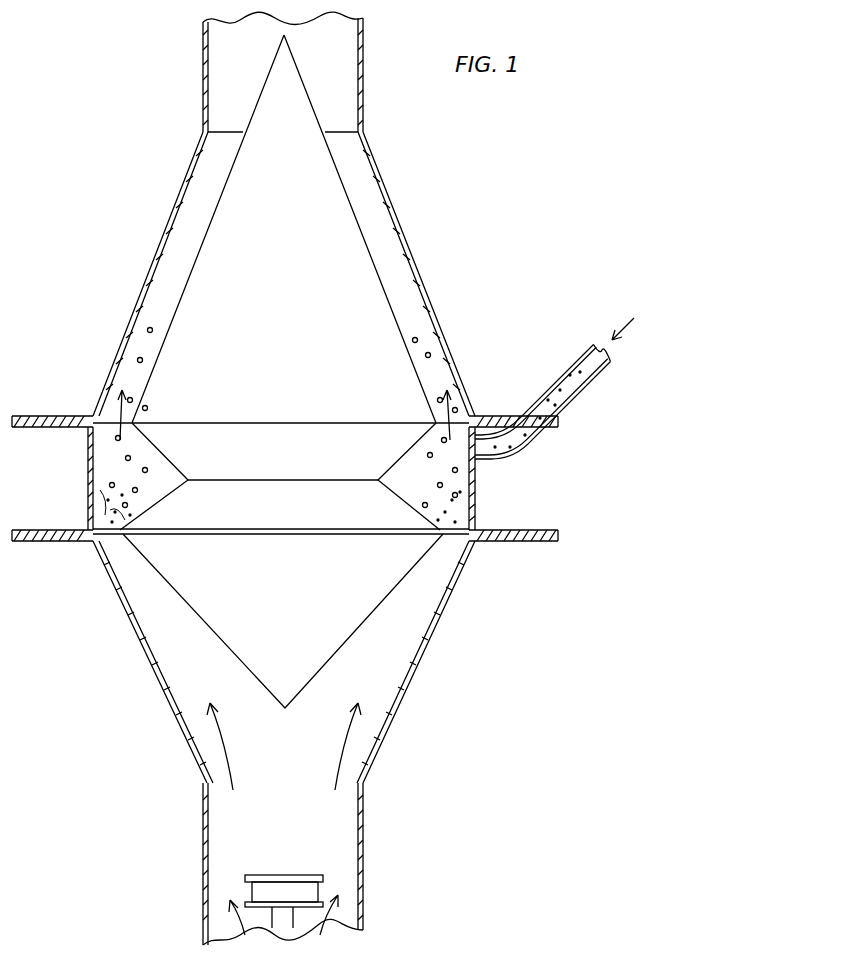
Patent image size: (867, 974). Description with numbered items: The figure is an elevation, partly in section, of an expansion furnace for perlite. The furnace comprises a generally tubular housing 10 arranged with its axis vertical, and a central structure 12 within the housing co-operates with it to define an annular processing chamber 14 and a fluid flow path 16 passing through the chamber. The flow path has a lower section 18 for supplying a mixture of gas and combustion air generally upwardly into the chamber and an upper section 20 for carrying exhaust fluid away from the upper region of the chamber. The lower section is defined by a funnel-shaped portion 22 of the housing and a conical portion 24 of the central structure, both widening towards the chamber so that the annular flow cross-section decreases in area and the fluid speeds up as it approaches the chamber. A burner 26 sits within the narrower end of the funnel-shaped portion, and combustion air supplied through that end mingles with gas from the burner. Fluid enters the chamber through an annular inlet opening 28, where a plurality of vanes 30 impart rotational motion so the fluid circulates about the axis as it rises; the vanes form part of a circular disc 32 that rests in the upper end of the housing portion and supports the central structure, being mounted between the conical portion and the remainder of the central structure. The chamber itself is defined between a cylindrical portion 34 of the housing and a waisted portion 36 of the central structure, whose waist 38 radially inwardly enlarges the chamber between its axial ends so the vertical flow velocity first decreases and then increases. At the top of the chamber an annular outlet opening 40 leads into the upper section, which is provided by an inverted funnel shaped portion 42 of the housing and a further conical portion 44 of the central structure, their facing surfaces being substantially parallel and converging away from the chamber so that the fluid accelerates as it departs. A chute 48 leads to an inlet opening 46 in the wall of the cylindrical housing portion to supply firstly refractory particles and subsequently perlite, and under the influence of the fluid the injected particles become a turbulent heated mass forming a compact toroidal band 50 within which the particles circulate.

The housing 10 is at (118, 306).
The central structure 12 is at (150, 368).
The annular processing chamber 14 is at (120, 462).
The fluid flow path 16 is at (107, 562).
The lower section 18 is at (193, 683).
The upper section 20 is at (176, 308).
The funnel-shaped portion 22 is at (190, 757).
The conical portion 24 is at (278, 688).
The burner 26 is at (278, 880).
The annular inlet opening 28 is at (437, 541).
The vanes 30 is at (478, 521).
The circular disc 32 is at (303, 532).
The cylindrical portion 34 is at (478, 492).
The waisted portion 36 is at (305, 470).
The waist 38 is at (378, 480).
The annular outlet opening 40 is at (462, 410).
The inverted funnel shaped portion 42 is at (425, 298).
The further conical portion 44 is at (355, 257).
The inlet opening 46 is at (493, 463).
The chute 48 is at (570, 390).
The compact toroidal band 50 is at (130, 512).